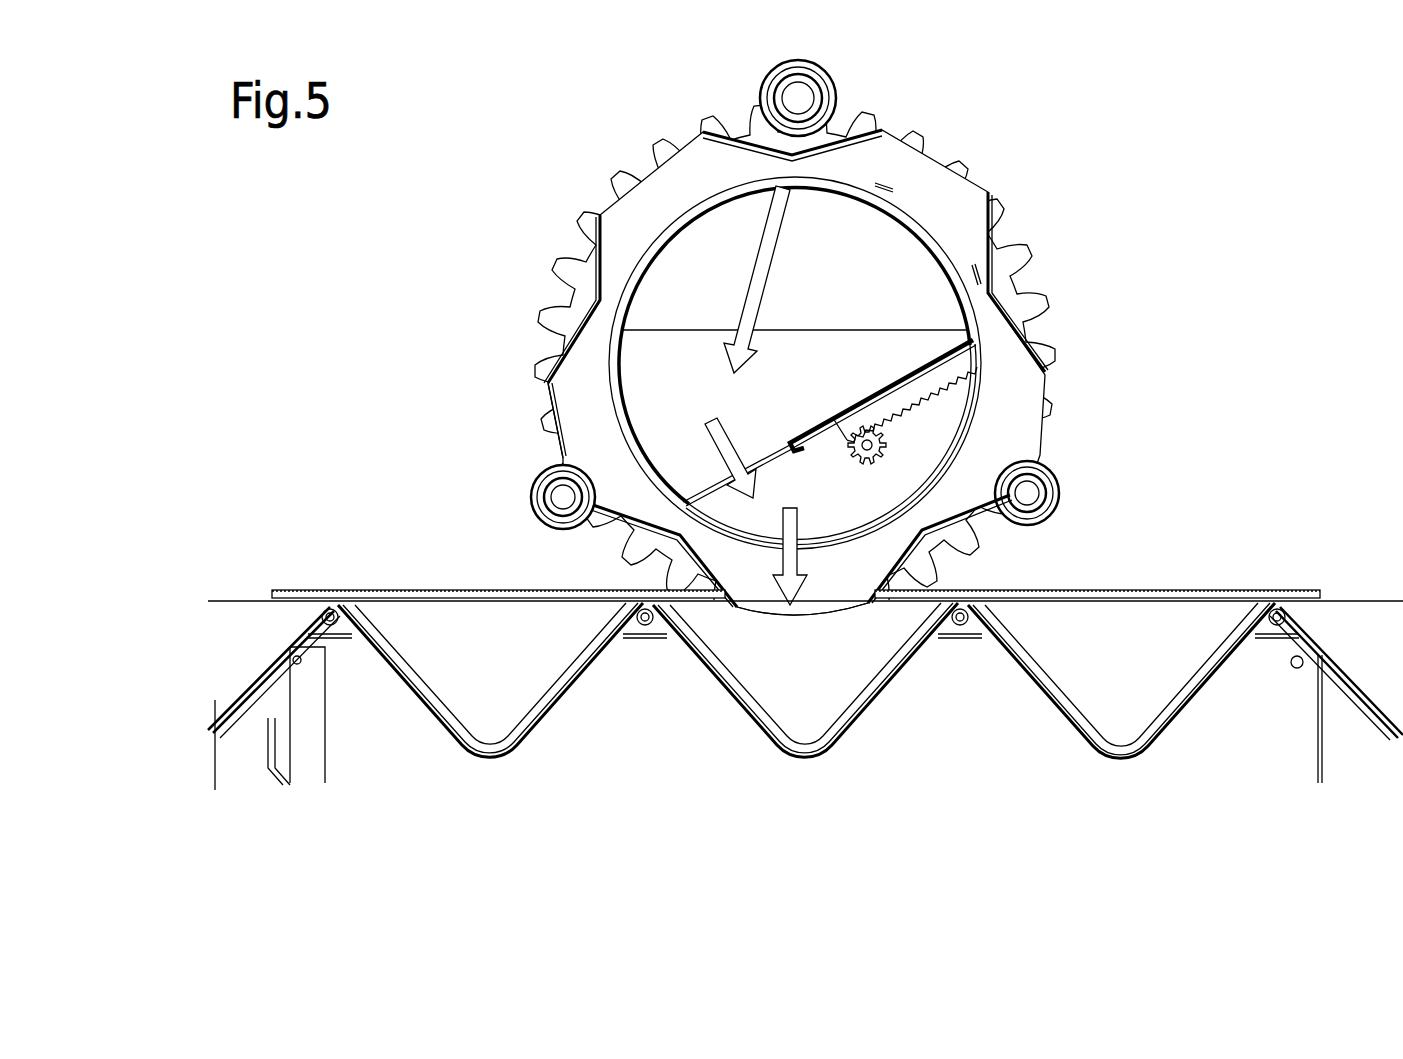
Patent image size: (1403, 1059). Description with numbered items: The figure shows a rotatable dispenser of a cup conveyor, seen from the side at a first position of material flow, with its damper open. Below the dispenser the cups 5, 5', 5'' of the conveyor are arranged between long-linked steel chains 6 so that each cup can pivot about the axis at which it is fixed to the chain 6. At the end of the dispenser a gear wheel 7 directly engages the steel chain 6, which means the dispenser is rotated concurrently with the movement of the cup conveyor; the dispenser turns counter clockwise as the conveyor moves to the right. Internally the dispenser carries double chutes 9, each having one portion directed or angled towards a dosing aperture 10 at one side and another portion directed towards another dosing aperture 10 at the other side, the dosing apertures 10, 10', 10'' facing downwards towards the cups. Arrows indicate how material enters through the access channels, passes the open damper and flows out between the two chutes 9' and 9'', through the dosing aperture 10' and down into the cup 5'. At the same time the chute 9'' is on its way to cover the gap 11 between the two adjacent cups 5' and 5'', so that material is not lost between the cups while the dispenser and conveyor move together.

The cup 5 is at (1121, 680).
The cup 5' is at (805, 680).
The cup 5'' is at (490, 680).
The long-linked steel chain 6 is at (1282, 612).
The gear wheel 7 is at (1018, 255).
The chute 9 is at (800, 287).
The chute 9' is at (992, 549).
The chute 9'' is at (606, 556).
The dosing aperture 10 is at (850, 337).
The dosing aperture 10' is at (856, 661).
The dosing aperture 10'' is at (498, 391).
The gap 11 is at (648, 607).